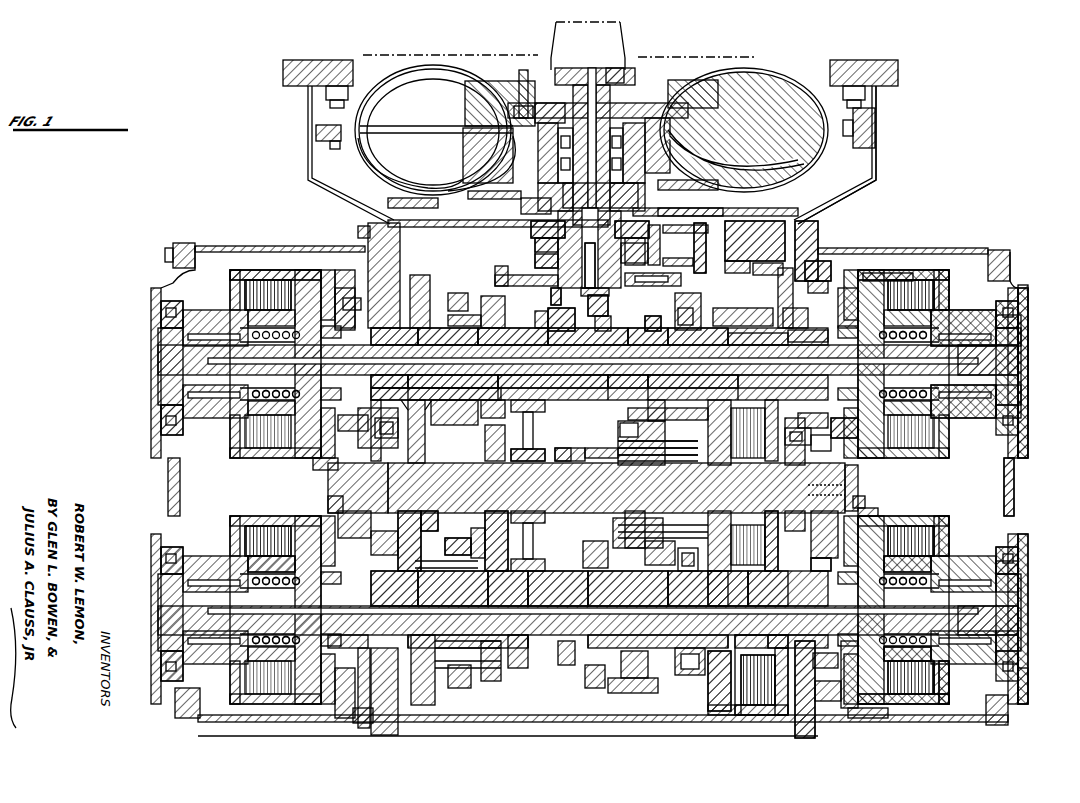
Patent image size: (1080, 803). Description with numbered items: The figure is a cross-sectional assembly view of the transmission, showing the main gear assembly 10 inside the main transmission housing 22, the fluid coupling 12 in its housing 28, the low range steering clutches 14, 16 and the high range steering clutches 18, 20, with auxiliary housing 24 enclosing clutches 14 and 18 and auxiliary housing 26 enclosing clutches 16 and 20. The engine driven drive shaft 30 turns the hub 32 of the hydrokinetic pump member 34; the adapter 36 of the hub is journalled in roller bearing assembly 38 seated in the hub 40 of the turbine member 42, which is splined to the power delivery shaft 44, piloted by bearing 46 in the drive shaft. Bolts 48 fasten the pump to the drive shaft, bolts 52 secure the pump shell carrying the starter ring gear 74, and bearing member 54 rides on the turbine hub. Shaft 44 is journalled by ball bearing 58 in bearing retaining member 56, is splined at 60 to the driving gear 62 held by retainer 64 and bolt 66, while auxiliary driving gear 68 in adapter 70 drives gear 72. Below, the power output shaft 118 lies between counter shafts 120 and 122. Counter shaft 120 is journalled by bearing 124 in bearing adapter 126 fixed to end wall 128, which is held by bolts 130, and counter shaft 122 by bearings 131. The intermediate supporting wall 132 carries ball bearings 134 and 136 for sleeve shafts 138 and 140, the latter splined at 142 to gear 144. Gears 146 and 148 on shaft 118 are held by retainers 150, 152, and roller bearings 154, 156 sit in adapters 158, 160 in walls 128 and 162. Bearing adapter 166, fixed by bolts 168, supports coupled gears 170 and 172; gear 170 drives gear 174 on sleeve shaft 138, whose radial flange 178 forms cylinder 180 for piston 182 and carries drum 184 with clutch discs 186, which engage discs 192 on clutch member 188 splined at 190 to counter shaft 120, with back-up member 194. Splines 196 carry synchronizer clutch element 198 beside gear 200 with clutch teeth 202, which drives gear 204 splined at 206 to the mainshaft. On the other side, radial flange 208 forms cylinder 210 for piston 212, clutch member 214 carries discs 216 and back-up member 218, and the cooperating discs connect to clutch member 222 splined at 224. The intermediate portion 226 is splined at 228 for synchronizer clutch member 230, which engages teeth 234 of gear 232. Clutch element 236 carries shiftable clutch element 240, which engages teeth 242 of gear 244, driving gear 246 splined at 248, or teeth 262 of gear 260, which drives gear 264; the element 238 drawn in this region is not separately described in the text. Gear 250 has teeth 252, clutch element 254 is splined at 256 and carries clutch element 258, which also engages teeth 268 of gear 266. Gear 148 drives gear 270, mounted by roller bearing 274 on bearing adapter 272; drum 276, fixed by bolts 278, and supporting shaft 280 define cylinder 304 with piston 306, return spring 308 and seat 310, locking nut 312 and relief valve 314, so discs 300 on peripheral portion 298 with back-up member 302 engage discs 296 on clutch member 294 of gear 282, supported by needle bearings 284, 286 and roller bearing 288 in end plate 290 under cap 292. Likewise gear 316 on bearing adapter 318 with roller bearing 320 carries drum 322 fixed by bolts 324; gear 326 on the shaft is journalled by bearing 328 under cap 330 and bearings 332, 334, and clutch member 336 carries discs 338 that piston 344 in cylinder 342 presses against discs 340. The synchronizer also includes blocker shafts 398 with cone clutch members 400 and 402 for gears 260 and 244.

The main gear assembly 10 is at (470, 290).
The fluid coupling 12 is at (770, 62).
The low range steering clutch 14 is at (941, 508).
The low range steering clutch 16 is at (225, 508).
The high range steering clutch 18 is at (945, 262).
The high range steering clutch 20 is at (225, 262).
The main transmission housing 22 is at (452, 213).
The auxiliary housing 24 is at (990, 242).
The auxiliary housing 26 is at (280, 238).
The housing 28 is at (870, 140).
The drive shaft 30 is at (625, 20).
The hub 32 is at (688, 72).
The hydrokinetic pump member 34 is at (480, 66).
The adapter 36 is at (555, 95).
The roller bearing assembly 38 is at (505, 131).
The hub 40 is at (505, 143).
The hydrokinetic turbine member 42 is at (395, 171).
The power delivery shaft 44 is at (523, 225).
The bearing 46 is at (606, 60).
The bolts 48 is at (516, 62).
The bolts 52 is at (318, 134).
The bearing member 54 is at (513, 198).
The bearing retaining member 56 is at (577, 202).
The ball bearing 58 is at (527, 251).
The external splines 60 is at (552, 304).
The driving gear 62 is at (535, 267).
The retainer 64 is at (580, 292).
The bolt 66 is at (588, 255).
The auxiliary driving gear 68 is at (760, 208).
The adapter 70 is at (688, 246).
The gear 72 is at (668, 252).
The engine starter ring gear 74 is at (860, 120).
The power output shaft 118 is at (572, 449).
The counter shaft 120 is at (575, 555).
The counter shaft 122 is at (540, 302).
The bearing 124 is at (360, 627).
The bearing adapter 126 is at (293, 578).
The end wall 128 is at (392, 268).
The bolts 130 is at (350, 224).
The bearings 131 is at (392, 370).
The intermediate supporting wall 132 is at (667, 298).
The ball bearing 134 is at (667, 655).
The ball bearing 136 is at (672, 312).
The sleeve shaft 138 is at (662, 628).
The sleeve shaft 140 is at (663, 337).
The spline 142 is at (618, 337).
The external gear 144 is at (637, 312).
The gear 146 is at (315, 462).
The gear 148 is at (850, 445).
The retainer 150 is at (320, 494).
The retainer 152 is at (856, 490).
The roller bearing 154 is at (378, 469).
The roller bearing 156 is at (787, 457).
The bearing adapter 158 is at (380, 386).
The bearing adapter 160 is at (810, 393).
The end wall 162 is at (810, 265).
The bearing adapter 166 is at (605, 449).
The bolts 168 is at (665, 457).
The gear 170 is at (612, 417).
The gear 172 is at (636, 372).
The gear 174 is at (624, 670).
The radial flange 178 is at (710, 707).
The annular cylinder 180 is at (700, 690).
The annular piston 182 is at (665, 585).
The drum-like clutch member 184 is at (752, 710).
The clutch discs 186 is at (740, 707).
The clutch member 188 is at (718, 587).
The spline 190 is at (770, 585).
The clutch discs 192 is at (760, 512).
The clutch disc back-up member 194 is at (550, 650).
The external splines 196 is at (600, 585).
The synchronizer clutch element 198 is at (577, 668).
The gear 200 is at (490, 673).
The clutch teeth 202 is at (535, 585).
The gear 204 is at (537, 550).
The splined connection 206 is at (522, 455).
The radial flange 208 is at (700, 268).
The annular cylinder 210 is at (758, 240).
The annular piston 212 is at (698, 233).
The clutch member 214 is at (752, 255).
The clutch discs 216 is at (728, 253).
The clutch disc back-up member 218 is at (828, 267).
The clutch member 222 is at (805, 293).
The spline connection 224 is at (755, 340).
The intermediate portion 226 is at (572, 370).
The splines 228 is at (592, 372).
The synchronizer clutch member 230 is at (575, 418).
The gear 232 is at (530, 303).
The clutch teeth 234 is at (575, 337).
The clutch element 236 is at (445, 585).
The sleeve 238 is at (452, 627).
The shiftable clutch element 240 is at (455, 680).
The clutch teeth 242 is at (490, 585).
The gear 244 is at (492, 714).
The gear 246 is at (490, 503).
The spline connection 248 is at (470, 471).
The gear 250 is at (485, 288).
The clutch teeth 252 is at (482, 338).
The spline clutch element 254 is at (455, 338).
The spline connection 256 is at (425, 370).
The clutch element 258 is at (418, 425).
The gear 260 is at (420, 697).
The clutch teeth 262 is at (412, 585).
The gear 264 is at (425, 510).
The gear 266 is at (418, 267).
The clutch teeth 268 is at (412, 338).
The gear 270 is at (838, 710).
The bearing adapter 272 is at (812, 650).
The roller bearing 274 is at (813, 563).
The drum-shaped clutch member 276 is at (880, 696).
The bolts 278 is at (832, 509).
The supporting shaft 280 is at (1010, 595).
The gear 282 is at (196, 535).
The needle bearing 284 is at (965, 601).
The needle bearing 286 is at (1020, 575).
The roller bearing 288 is at (178, 650).
The end plate 290 is at (1006, 478).
The cap 292 is at (1020, 618).
The clutch member 294 is at (941, 535).
The clutch discs 296 is at (915, 518).
The outer peripheral portion 298 is at (268, 518).
The clutch discs 300 is at (926, 675).
The clutch disc backup member 302 is at (941, 665).
The annular working cylinder 304 is at (925, 645).
The annular piston 306 is at (846, 712).
The piston return spring 308 is at (870, 575).
The spring seat member 310 is at (900, 580).
The locking nut 312 is at (805, 630).
The ball check pressure relief valve 314 is at (858, 500).
The gear 316 is at (850, 300).
The bearing adapter 318 is at (795, 324).
The roller bearing 320 is at (830, 280).
The drum-shaped clutch member 322 is at (910, 262).
The bolts 324 is at (890, 265).
The gear 326 is at (998, 293).
The roller bearing 328 is at (1020, 305).
The cap 330 is at (1020, 358).
The bearing 332 is at (948, 338).
The bearing 334 is at (1020, 325).
The clutch member 336 is at (941, 300).
The clutch discs 338 is at (948, 410).
The clutch discs 340 is at (941, 283).
The annular cylinder 342 is at (930, 395).
The annular piston 344 is at (945, 330).
The blocker shafts 398 is at (446, 532).
The cone clutch member 400 is at (410, 497).
The cone clutch member 402 is at (468, 540).